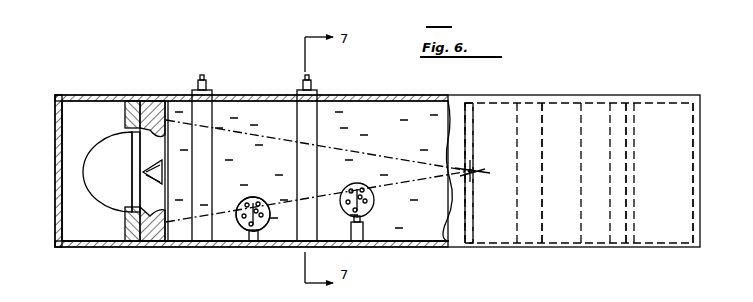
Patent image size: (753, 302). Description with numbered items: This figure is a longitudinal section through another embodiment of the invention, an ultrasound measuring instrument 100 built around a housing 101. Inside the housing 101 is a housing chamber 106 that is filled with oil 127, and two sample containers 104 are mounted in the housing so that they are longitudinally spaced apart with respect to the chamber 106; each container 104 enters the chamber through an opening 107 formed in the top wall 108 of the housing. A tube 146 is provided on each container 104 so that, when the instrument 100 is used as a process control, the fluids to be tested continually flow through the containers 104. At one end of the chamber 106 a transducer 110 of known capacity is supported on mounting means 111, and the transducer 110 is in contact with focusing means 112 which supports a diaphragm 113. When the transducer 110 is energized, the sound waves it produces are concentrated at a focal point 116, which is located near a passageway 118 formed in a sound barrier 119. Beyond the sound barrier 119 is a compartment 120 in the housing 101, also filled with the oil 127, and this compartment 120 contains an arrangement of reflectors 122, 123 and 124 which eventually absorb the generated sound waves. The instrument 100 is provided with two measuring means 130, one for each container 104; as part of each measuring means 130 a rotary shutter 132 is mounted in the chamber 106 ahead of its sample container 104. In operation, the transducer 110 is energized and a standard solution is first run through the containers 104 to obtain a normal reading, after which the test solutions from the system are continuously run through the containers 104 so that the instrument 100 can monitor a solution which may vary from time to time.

The ultrasound measuring instrument 100 is at (627, 50).
The housing 101 is at (553, 97).
The sample containers 104 is at (205, 163).
The housing chamber 106 is at (430, 228).
The openings 107 is at (213, 97).
The top wall 108 is at (398, 101).
The transducer 110 is at (107, 194).
The mounting means 111 is at (81, 112).
The focusing means 112 is at (122, 199).
The diaphragm 113 is at (157, 100).
The focal point 116 is at (452, 180).
The passageway 118 is at (474, 166).
The sound barrier 119 is at (486, 95).
The compartment 120 is at (663, 115).
The reflector 122 is at (518, 207).
The reflector 123 is at (566, 232).
The reflector 124 is at (624, 228).
The oil 127 is at (420, 105).
The measuring means 130 is at (272, 226).
The rotary shutter 132 is at (239, 226).
The tube 146 is at (202, 75).